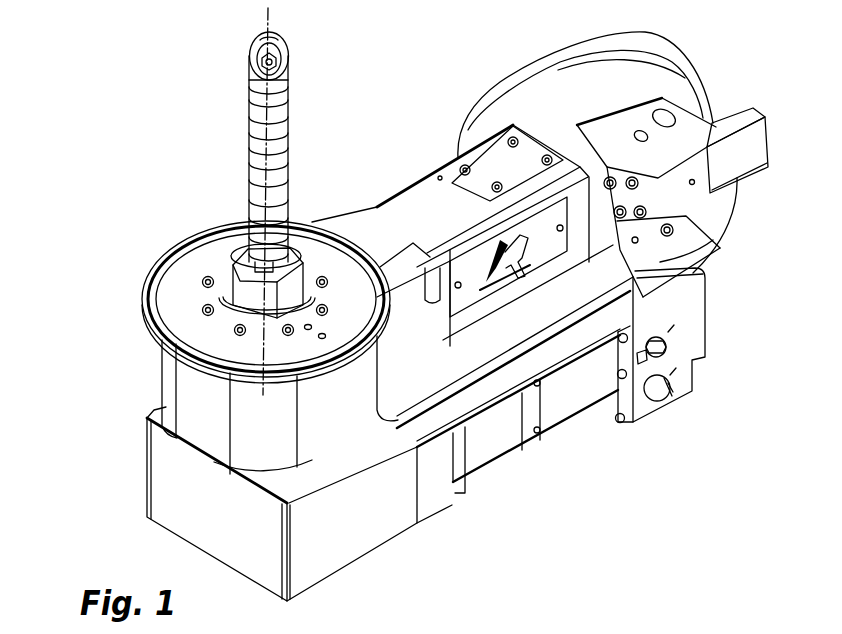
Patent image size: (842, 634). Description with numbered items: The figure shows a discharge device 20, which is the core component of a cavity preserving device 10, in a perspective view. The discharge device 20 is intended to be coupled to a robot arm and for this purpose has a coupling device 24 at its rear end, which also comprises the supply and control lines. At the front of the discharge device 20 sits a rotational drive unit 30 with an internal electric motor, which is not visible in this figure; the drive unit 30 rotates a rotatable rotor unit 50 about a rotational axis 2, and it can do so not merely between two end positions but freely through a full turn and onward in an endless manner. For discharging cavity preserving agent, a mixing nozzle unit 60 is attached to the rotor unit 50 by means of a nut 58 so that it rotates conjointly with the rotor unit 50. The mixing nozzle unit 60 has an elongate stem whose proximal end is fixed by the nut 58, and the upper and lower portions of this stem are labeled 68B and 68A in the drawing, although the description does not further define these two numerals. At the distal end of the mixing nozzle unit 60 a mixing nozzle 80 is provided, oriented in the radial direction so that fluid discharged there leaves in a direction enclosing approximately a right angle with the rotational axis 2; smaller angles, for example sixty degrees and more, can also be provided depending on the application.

The rotational axis 2 is at (267, 22).
The cavity preserving device 10 is at (150, 171).
The discharge device 20 is at (547, 442).
The coupling device 24 is at (711, 88).
The rotational drive unit 30 is at (141, 413).
The rotor unit 50 is at (212, 270).
The nut 58 is at (288, 294).
The mixing nozzle unit 60 is at (296, 159).
The lower coupling collar 68A is at (243, 247).
The upper coupling section 68B is at (250, 162).
The mixing nozzle 80 is at (283, 60).